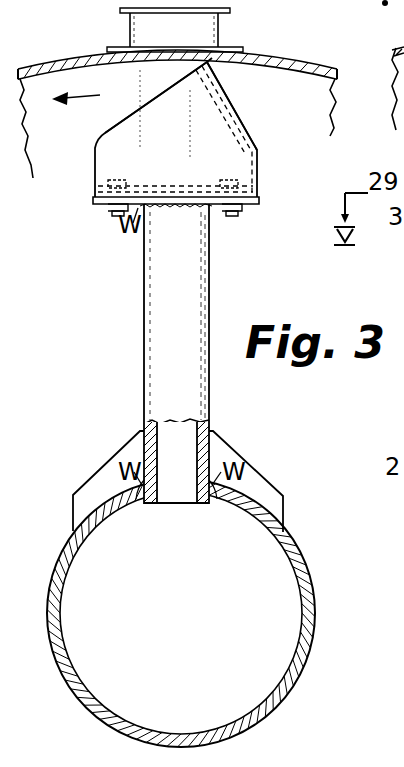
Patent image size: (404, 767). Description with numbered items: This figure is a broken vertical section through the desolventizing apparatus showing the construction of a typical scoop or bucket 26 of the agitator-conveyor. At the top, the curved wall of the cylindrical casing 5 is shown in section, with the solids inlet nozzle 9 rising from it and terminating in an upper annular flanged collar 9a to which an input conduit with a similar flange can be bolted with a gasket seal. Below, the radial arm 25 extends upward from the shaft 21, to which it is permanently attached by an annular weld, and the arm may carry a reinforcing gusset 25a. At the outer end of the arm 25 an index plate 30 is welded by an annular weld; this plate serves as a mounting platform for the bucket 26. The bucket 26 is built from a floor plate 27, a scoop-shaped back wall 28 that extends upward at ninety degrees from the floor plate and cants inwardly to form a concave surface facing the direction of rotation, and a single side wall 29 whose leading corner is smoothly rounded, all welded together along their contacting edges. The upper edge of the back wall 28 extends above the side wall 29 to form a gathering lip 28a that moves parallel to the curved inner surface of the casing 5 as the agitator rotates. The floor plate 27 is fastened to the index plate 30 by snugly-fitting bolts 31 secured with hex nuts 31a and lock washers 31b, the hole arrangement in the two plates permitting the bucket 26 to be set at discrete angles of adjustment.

The cylindrical casing 5 is at (318, 81).
The solids inlet nozzle 9 is at (130, 32).
The upper annular flanged collar 9a is at (230, 11).
The shaft 21 is at (300, 612).
The radial arm 25 is at (143, 320).
The reinforcing gusset 25a is at (122, 448).
The bucket 26 is at (177, 153).
The floor plate portion 27 is at (98, 178).
The back wall portion 28 is at (241, 113).
The gathering lip 28a is at (204, 63).
The side wall portion 29 is at (106, 133).
The index plate 30 is at (100, 205).
The bolt 31 is at (222, 179).
The hex nut 31a is at (240, 213).
The lock washer 31b is at (245, 205).